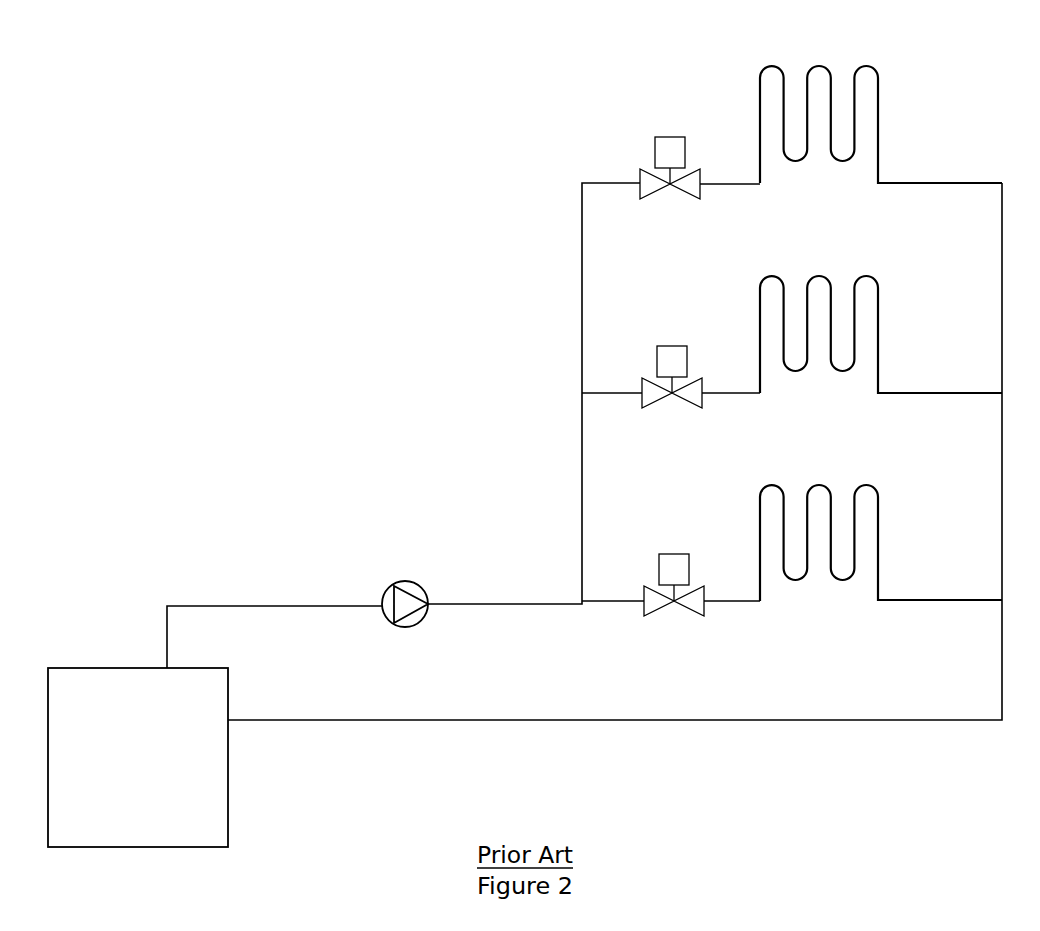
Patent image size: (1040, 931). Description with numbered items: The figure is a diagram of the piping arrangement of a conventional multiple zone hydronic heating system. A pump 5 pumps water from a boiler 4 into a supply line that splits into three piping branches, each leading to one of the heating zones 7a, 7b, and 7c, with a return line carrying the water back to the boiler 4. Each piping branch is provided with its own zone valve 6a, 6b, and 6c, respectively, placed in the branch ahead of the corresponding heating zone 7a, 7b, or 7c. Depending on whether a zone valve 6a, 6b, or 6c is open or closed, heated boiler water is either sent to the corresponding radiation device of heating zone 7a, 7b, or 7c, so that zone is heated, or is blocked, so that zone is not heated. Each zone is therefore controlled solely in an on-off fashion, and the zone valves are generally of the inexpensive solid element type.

The boiler 4 is at (138, 736).
The pump 5 is at (405, 578).
The zone valve 6a is at (670, 147).
The zone valve 6b is at (672, 356).
The zone valve 6c is at (674, 565).
The heating zone 7a is at (881, 101).
The heating zone 7b is at (881, 311).
The heating zone 7c is at (881, 520).